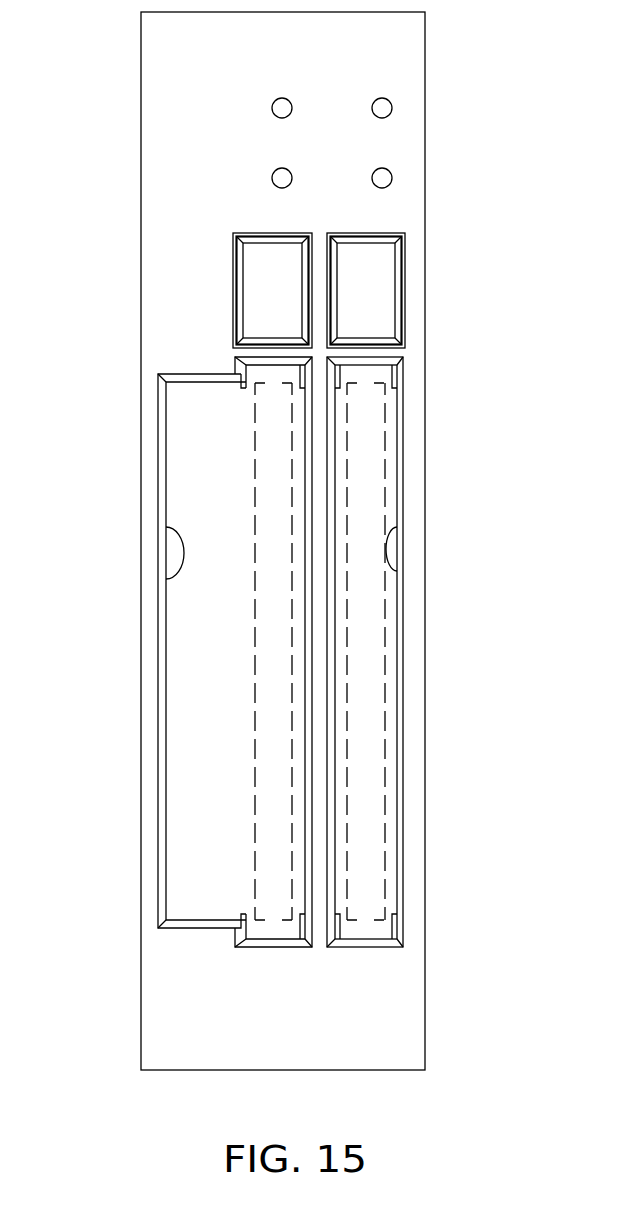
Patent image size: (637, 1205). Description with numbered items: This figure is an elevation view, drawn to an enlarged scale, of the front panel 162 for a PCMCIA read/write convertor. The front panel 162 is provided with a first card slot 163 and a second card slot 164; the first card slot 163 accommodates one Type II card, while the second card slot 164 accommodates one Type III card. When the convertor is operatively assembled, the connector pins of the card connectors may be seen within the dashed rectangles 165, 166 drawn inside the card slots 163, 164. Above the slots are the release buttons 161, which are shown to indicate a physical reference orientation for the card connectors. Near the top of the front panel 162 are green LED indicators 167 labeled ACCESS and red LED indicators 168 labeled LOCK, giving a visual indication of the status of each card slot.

The release buttons 161 is at (250, 291).
The front panel 162 is at (155, 117).
The first card slot 163 is at (392, 530).
The second card slot 164 is at (170, 530).
The dashed rectangle 165 is at (347, 652).
The dashed rectangle 166 is at (255, 703).
The green LED indicators 167 is at (272, 103).
The red LED indicators 168 is at (272, 174).